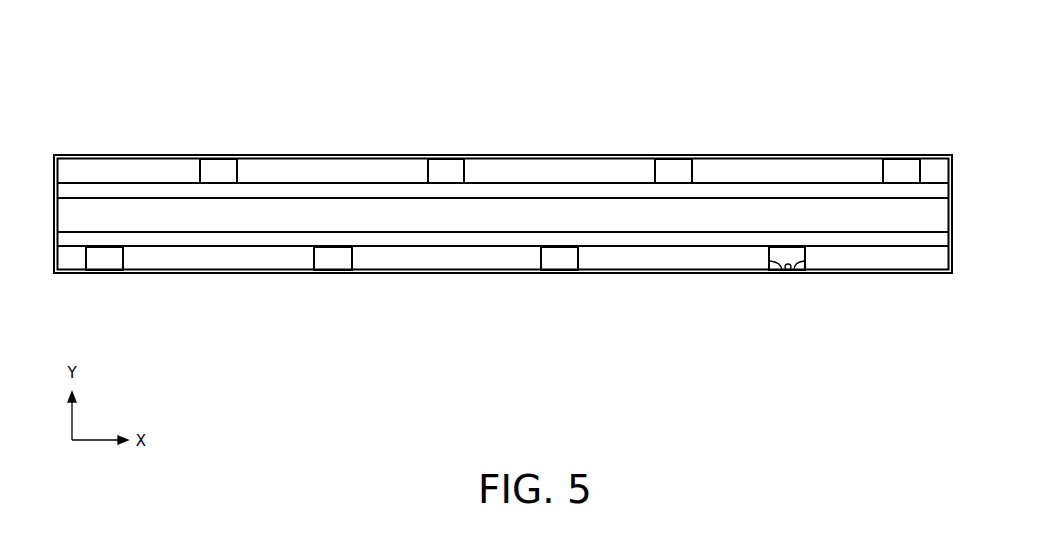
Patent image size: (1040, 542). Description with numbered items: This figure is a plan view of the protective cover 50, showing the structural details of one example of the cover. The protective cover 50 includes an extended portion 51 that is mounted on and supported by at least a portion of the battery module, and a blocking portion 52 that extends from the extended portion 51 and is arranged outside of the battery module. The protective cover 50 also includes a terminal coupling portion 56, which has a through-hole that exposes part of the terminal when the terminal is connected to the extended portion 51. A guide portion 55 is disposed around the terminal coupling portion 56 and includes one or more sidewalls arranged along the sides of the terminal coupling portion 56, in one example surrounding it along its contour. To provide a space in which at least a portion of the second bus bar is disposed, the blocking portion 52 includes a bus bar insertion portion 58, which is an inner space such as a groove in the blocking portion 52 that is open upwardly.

The protective cover 50 is at (531, 45).
The extended portion 51 is at (853, 259).
The blocking portion 52 is at (958, 187).
The guide portion 55 is at (778, 271).
The terminal coupling portion 56 is at (570, 259).
The bus bar insertion portion 58 is at (404, 237).